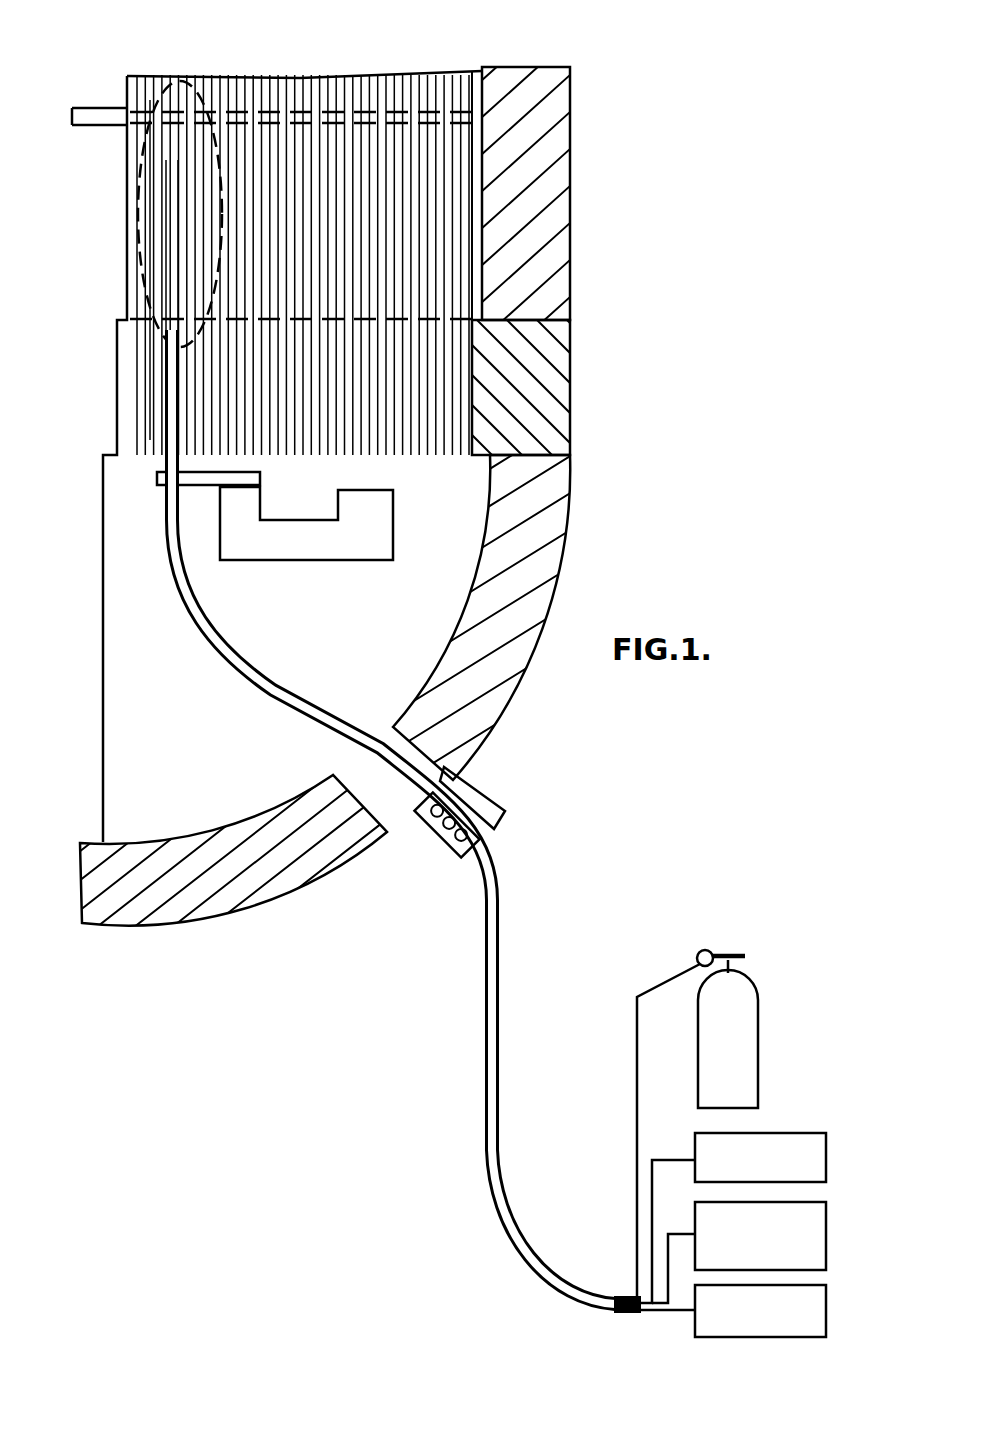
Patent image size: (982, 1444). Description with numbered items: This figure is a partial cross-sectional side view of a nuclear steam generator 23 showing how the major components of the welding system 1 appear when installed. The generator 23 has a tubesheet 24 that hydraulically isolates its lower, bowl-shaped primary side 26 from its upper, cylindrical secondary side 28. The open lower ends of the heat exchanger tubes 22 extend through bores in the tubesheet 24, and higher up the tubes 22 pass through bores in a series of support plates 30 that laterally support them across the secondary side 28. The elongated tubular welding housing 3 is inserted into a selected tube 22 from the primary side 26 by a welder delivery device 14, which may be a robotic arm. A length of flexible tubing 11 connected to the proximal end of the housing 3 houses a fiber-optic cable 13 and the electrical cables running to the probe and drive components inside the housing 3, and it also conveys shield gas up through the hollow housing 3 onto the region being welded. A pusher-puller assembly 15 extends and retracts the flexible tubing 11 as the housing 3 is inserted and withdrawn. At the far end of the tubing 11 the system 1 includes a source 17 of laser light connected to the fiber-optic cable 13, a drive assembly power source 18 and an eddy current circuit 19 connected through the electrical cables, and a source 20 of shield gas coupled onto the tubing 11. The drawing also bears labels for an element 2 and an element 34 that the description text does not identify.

The welding system 1 is at (765, 945).
The tube end region 2 is at (194, 78).
The welding housing 3 is at (172, 240).
The flexible tubing 11 is at (272, 690).
The fiber-optic cable 13 is at (633, 1312).
The welder delivery device 14 is at (312, 550).
The pusher-puller assembly 15 is at (476, 787).
The source of laser light 17 is at (826, 1300).
The drive assembly power source 18 is at (826, 1218).
The eddy current circuit 19 is at (826, 1155).
The source of shield gas 20 is at (748, 1027).
The heat exchanger tubes 22 is at (175, 165).
The nuclear steam generator 23 is at (578, 185).
The tubesheet 24 is at (560, 372).
The primary side 26 is at (503, 712).
The secondary side 28 is at (572, 245).
The support plates 30 is at (483, 120).
The curved lens 34 is at (352, 796).